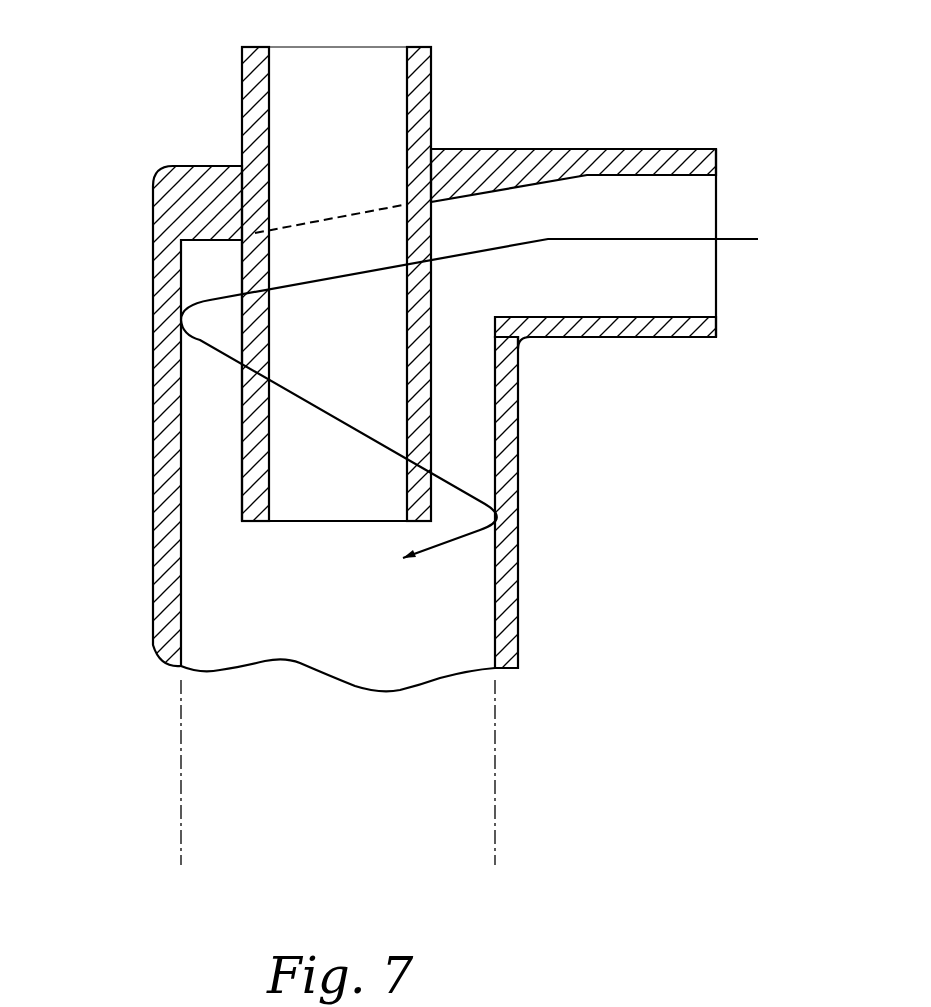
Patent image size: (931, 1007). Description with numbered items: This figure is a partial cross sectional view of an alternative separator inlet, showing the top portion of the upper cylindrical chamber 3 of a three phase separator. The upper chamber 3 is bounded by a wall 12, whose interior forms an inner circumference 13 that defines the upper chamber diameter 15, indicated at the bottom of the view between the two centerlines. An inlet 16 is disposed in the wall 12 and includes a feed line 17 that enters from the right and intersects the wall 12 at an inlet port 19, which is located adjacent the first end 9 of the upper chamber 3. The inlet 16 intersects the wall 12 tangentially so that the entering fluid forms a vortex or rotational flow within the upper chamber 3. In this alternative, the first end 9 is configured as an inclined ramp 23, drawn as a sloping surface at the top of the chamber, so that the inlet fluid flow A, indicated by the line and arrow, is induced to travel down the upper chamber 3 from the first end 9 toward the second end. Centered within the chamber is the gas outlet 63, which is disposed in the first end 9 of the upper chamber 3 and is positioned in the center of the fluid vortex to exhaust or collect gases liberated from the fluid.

The upper cylindrical chamber 3 is at (227, 588).
The first end 9 is at (222, 245).
The wall 12 is at (163, 478).
The inner circumference 13 is at (493, 598).
The upper chamber diameter 15 is at (495, 798).
The inlet 16 is at (622, 146).
The feed line 17 is at (687, 148).
The inlet port 19 is at (487, 282).
The inclined ramp 23 is at (461, 194).
The gas outlet 63 is at (236, 382).
The inlet fluid flow A is at (492, 390).